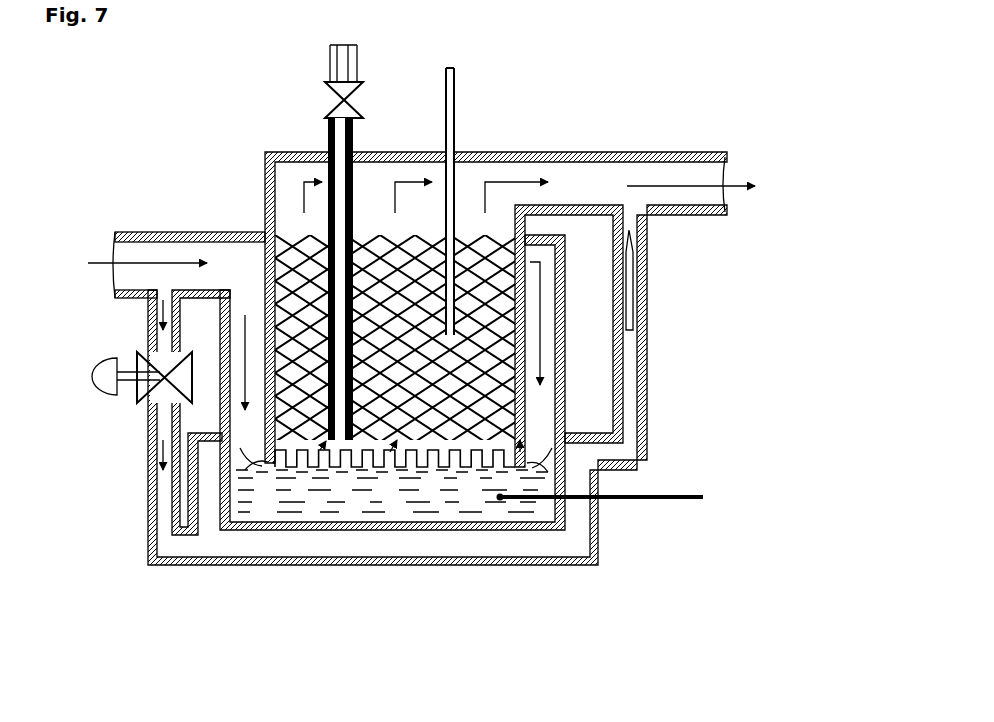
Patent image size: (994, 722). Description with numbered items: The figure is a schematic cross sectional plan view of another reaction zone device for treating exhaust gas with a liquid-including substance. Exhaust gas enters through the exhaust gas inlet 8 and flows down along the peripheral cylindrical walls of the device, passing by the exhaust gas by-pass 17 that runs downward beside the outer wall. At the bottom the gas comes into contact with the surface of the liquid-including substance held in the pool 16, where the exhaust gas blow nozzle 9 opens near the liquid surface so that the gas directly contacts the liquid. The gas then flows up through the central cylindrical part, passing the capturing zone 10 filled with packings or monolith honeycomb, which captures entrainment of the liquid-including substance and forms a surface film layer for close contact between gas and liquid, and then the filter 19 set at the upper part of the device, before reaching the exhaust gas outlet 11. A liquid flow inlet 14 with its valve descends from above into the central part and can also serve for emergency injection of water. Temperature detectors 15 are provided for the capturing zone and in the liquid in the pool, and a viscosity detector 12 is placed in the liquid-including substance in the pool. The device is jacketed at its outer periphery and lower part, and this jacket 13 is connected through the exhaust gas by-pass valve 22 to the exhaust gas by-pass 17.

The exhaust gas inlet 8 is at (125, 280).
The exhaust gas blow nozzle 9 is at (262, 468).
The capturing zone 10 is at (755, 296).
The exhaust gas outlet 11 is at (760, 195).
The viscosity detector 12 is at (335, 492).
The outer vessel 13 is at (755, 538).
The liquid flow inlet 14 is at (108, 128).
The temperature detector 15 is at (455, 112).
The pool 16 is at (755, 594).
The exhaust gas by-pass 17 is at (148, 327).
The filter 19 is at (308, 236).
The exhaust gas by-pass valve 22 is at (92, 374).